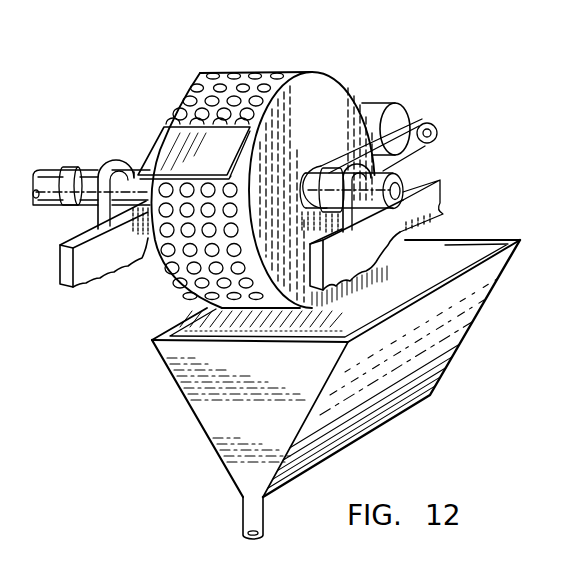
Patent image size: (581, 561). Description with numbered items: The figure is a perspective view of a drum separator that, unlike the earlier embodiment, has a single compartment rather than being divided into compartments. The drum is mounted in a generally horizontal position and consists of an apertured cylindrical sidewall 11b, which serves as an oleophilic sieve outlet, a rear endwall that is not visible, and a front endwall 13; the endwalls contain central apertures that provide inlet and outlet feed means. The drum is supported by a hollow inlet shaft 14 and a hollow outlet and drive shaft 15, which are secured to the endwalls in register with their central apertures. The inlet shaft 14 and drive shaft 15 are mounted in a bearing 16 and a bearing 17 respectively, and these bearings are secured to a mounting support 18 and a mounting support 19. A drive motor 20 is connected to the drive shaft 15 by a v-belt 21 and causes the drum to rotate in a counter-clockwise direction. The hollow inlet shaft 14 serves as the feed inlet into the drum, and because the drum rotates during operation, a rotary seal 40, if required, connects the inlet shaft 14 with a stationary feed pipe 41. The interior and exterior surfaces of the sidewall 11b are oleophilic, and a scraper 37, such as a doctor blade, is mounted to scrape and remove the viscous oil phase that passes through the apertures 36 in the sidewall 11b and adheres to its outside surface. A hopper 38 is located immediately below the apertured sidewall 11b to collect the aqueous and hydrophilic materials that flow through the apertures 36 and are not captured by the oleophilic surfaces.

The apertured cylindrical sidewall 11b is at (273, 72).
The front endwall 13 is at (342, 92).
The hollow inlet shaft 14 is at (97, 169).
The hollow outlet and drive shaft 15 is at (396, 193).
The bearing 16 is at (120, 161).
The bearing 17 is at (360, 222).
The mounting support 18 is at (65, 270).
The mounting support 19 is at (358, 256).
The drive motor 20 is at (400, 114).
The v-belt 21 is at (418, 160).
The apertures 36 is at (200, 72).
The scraper 37 is at (163, 143).
The hopper 38 is at (197, 407).
The rotary seal 40 is at (68, 168).
The stationary feed pipe 41 is at (45, 206).